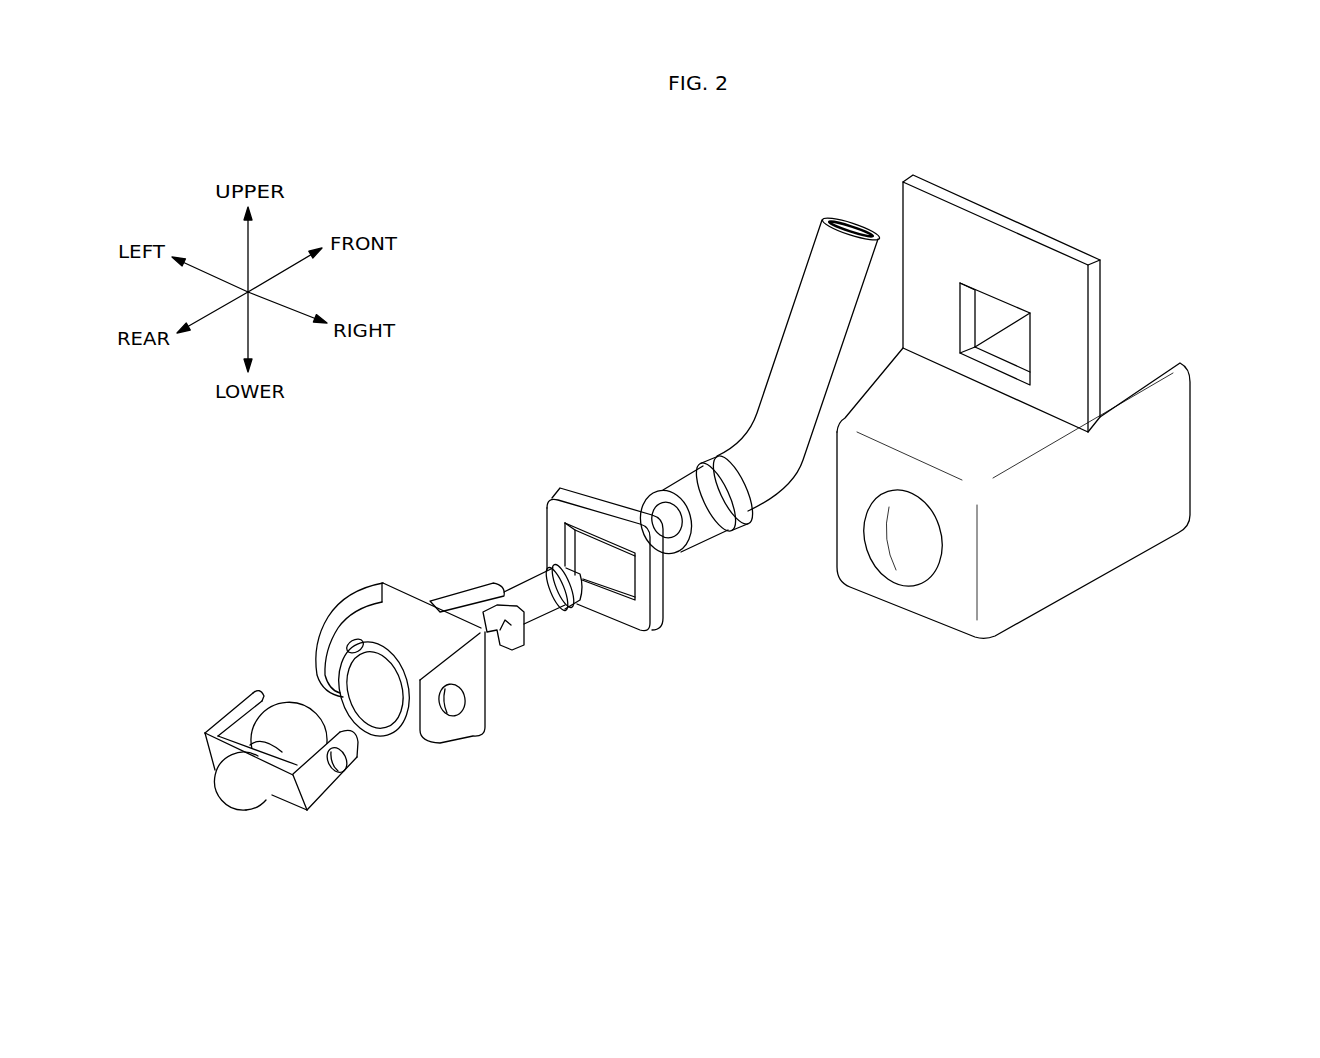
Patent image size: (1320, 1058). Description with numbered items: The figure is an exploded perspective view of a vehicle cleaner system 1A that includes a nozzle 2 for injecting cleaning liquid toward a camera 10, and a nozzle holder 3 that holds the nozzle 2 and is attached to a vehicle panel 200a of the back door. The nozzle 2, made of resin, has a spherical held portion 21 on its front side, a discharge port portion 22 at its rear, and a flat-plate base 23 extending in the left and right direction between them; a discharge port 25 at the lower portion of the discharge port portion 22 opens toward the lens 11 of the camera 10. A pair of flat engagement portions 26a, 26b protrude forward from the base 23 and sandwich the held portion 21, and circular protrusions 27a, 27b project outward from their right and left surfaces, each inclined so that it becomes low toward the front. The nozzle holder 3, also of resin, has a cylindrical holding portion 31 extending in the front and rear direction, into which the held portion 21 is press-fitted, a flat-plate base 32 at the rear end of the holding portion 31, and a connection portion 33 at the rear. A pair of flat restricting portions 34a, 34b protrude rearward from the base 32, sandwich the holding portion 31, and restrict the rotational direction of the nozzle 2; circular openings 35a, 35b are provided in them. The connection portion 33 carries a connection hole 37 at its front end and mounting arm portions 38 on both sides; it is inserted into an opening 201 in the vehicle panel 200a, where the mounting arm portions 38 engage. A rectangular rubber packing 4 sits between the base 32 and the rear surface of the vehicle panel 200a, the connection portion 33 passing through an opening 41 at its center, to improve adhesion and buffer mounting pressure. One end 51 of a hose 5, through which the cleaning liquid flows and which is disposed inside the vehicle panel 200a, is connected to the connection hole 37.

The vehicle cleaner system 1A is at (495, 316).
The nozzle 2 is at (192, 752).
The held portion 21 is at (282, 717).
The discharge port portion 22 is at (223, 787).
The base 23 is at (287, 797).
The discharge port 25 is at (242, 808).
The engagement portion 26a is at (317, 783).
The engagement portion 26b is at (208, 723).
The protrusion 27a is at (333, 763).
The protrusion 27b is at (230, 707).
The nozzle holder 3 is at (359, 570).
The holding portion 31 is at (399, 640).
The base 32 is at (413, 597).
The connection portion 33 is at (519, 586).
The restricting portion 34a is at (443, 727).
The restricting portion 34b is at (316, 650).
The opening 35a is at (465, 703).
The opening 35b is at (360, 640).
The connection hole 37 is at (581, 603).
The mounting arm portion 38 is at (447, 597).
The packing 4 is at (668, 583).
The opening 41 is at (657, 628).
The hose 5 is at (806, 287).
The one end 51 is at (672, 490).
The camera 10 is at (1180, 490).
The lens 11 is at (905, 565).
The vehicle panel 200a is at (1100, 290).
The opening 201 is at (993, 313).